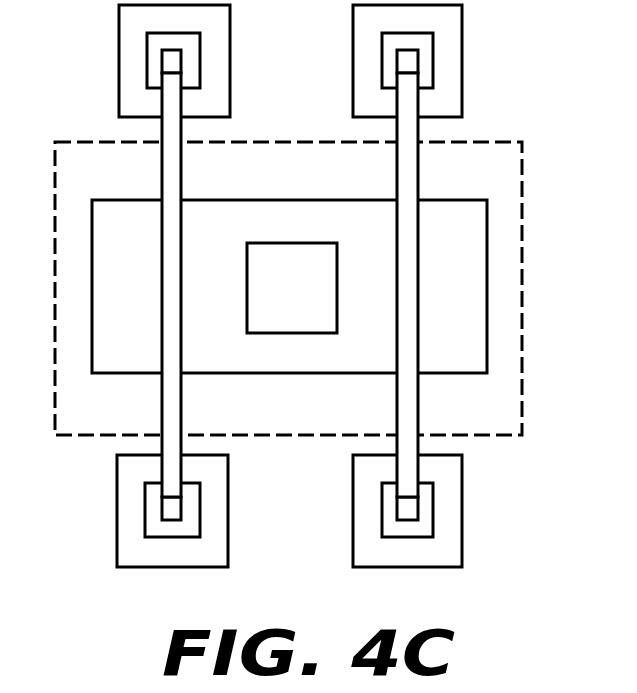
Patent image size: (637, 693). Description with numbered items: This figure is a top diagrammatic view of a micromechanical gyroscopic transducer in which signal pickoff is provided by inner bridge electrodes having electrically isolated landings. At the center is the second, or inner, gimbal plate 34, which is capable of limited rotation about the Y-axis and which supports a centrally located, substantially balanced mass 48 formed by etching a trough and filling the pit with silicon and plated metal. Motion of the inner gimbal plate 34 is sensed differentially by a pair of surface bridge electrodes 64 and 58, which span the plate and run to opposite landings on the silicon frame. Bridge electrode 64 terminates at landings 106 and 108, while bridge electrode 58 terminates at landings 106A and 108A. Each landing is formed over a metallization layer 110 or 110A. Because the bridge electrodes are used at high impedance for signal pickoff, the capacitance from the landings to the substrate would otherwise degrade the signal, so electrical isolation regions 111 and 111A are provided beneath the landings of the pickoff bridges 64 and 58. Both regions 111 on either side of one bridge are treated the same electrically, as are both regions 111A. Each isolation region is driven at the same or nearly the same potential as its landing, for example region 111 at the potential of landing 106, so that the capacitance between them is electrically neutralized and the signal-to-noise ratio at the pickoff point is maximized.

The second gimbal plate 34 is at (276, 362).
The centrally located mass 48 is at (280, 296).
The surface bridge electrode 58 is at (405, 265).
The surface bridge electrode 64 is at (172, 263).
The landing 106 is at (172, 62).
The landing 106A is at (410, 62).
The landing 108 is at (168, 503).
The landing 108A is at (408, 507).
The metallization layer 110 is at (168, 44).
The metallization layer 110A is at (408, 43).
The electrical isolation region 111 is at (165, 21).
The electrical isolation region 111A is at (410, 20).